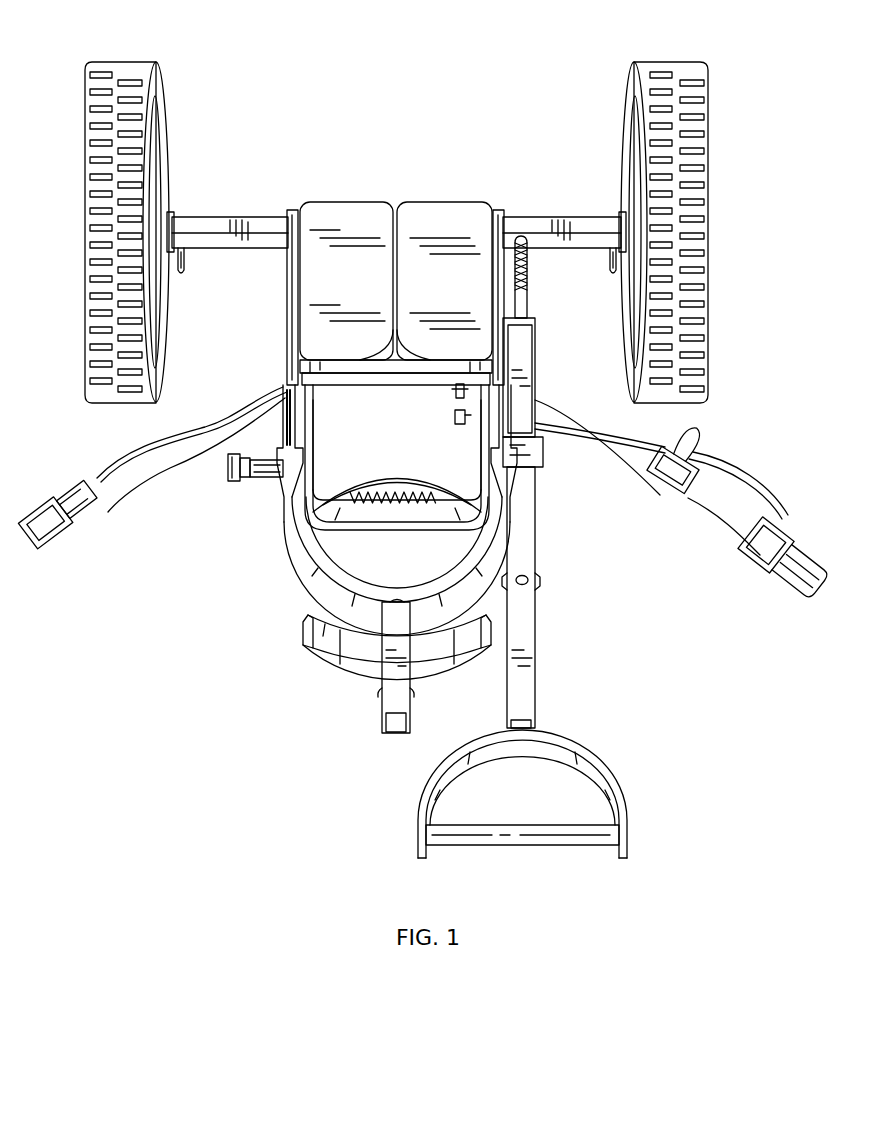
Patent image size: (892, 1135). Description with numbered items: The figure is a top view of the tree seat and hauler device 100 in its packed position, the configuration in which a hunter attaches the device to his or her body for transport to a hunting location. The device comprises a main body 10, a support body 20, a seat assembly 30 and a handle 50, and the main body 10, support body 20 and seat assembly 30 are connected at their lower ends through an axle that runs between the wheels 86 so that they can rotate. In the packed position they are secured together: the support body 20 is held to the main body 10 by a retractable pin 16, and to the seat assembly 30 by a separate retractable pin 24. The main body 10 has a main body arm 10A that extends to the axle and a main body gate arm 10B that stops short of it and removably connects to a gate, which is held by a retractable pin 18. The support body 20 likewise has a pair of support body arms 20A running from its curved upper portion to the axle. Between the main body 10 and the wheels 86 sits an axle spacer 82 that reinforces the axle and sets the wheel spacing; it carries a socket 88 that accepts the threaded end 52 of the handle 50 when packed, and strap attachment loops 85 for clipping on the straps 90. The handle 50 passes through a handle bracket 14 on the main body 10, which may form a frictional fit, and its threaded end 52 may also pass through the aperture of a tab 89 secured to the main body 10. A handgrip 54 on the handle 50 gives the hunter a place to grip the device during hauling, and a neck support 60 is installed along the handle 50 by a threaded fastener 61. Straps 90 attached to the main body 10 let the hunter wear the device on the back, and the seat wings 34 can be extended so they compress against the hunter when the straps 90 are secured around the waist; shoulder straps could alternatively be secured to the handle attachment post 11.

The tree seat and hauler device 100 is at (205, 523).
The main body 10 is at (296, 589).
The main body arm 10A is at (530, 490).
The main body gate arm 10B is at (288, 515).
The handle attachment post 11 is at (388, 703).
The handle bracket 14 is at (543, 452).
The retractable pin 16 is at (455, 418).
The retractable pin 18 is at (228, 467).
The support body 20 is at (300, 507).
The support body arms 20A is at (314, 420).
The retractable pin 24 is at (455, 392).
The seat assembly 30 is at (396, 264).
The seat wings 34 is at (423, 205).
The handle 50 is at (530, 620).
The threaded end 52 is at (528, 262).
The handgrip 54 is at (497, 845).
The neck support 60 is at (330, 660).
The threaded fastener 61 is at (541, 580).
The axle spacer 82 is at (202, 223).
The strap attachment loops 85 is at (182, 274).
The wheels 86 is at (120, 62).
The socket 88 is at (522, 236).
The tab 89 is at (536, 328).
The straps 90 is at (120, 452).